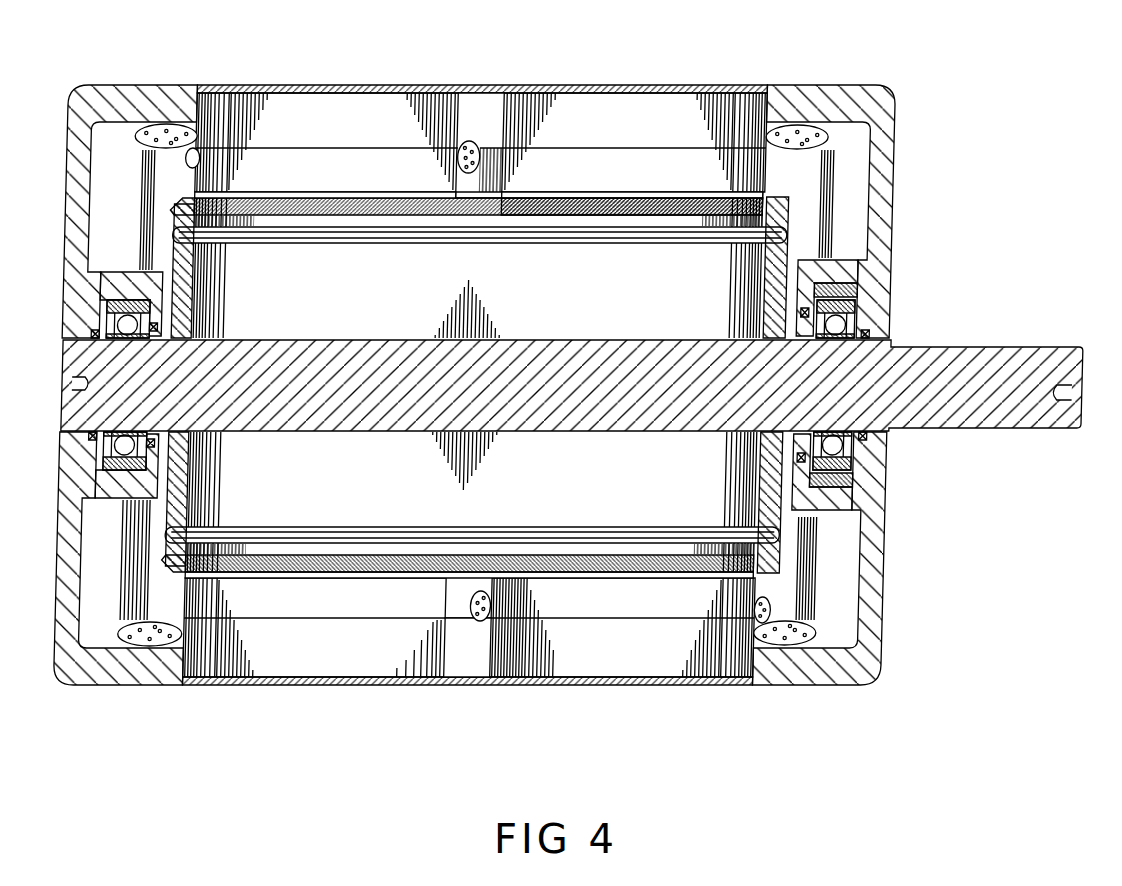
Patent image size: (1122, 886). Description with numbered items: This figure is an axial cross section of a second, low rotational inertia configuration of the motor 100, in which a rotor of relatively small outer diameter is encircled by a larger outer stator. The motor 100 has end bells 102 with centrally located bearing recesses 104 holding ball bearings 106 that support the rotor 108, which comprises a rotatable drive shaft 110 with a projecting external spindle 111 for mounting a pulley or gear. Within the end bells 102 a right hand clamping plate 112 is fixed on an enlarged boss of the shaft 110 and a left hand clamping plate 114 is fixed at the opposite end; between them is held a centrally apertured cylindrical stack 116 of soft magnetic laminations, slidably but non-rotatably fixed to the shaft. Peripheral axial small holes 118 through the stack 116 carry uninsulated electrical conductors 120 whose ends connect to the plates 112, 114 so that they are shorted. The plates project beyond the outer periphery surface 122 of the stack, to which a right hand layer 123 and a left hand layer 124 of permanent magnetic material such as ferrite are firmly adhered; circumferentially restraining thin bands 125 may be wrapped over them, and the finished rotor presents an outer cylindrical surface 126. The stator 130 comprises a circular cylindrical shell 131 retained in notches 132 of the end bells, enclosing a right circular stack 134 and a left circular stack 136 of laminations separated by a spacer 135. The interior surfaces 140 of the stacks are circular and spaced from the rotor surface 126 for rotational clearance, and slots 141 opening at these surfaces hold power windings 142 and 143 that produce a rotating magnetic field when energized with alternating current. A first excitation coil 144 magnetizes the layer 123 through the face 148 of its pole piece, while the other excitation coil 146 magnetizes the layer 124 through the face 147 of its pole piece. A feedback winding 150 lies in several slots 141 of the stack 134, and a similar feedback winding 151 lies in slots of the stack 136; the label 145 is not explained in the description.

The motor 100 is at (561, 417).
The end bells 102 is at (75, 503).
The bearing recesses 104 is at (105, 463).
The ball bearings 106 is at (836, 318).
The rotor 108 is at (831, 295).
The drive shaft 110 is at (1036, 358).
The external spindle 111 is at (1064, 408).
The right hand clamping plate 112 is at (770, 273).
The left hand clamping plate 114 is at (184, 245).
The cylindrical stack 116 is at (747, 268).
The small holes 118 is at (261, 243).
The electrical conductors 120 is at (321, 233).
The outer periphery surface 122 is at (442, 216).
The right hand layer 123 is at (603, 208).
The left hand layer 124 is at (225, 202).
The restraining thin bands 125 is at (557, 193).
The outer cylindrical surface 126 is at (751, 196).
The stator 130 is at (687, 668).
The circular cylindrical shell 131 is at (628, 690).
The notches 132 is at (785, 668).
The right circular stack 134 is at (553, 683).
The spacer 135 is at (469, 680).
The left circular stack 136 is at (208, 603).
The interior surfaces 140 is at (563, 573).
The slots 141 is at (360, 148).
The power winding 142 is at (809, 612).
The power winding 143 is at (153, 172).
The first excitation coil 144 is at (692, 165).
The rotor end portion 145 is at (671, 204).
The excitation coil 146 is at (149, 683).
The pole piece face 147 is at (298, 575).
The pole piece face 148 is at (712, 195).
The feedback winding 150 is at (476, 618).
The feedback winding 151 is at (457, 142).